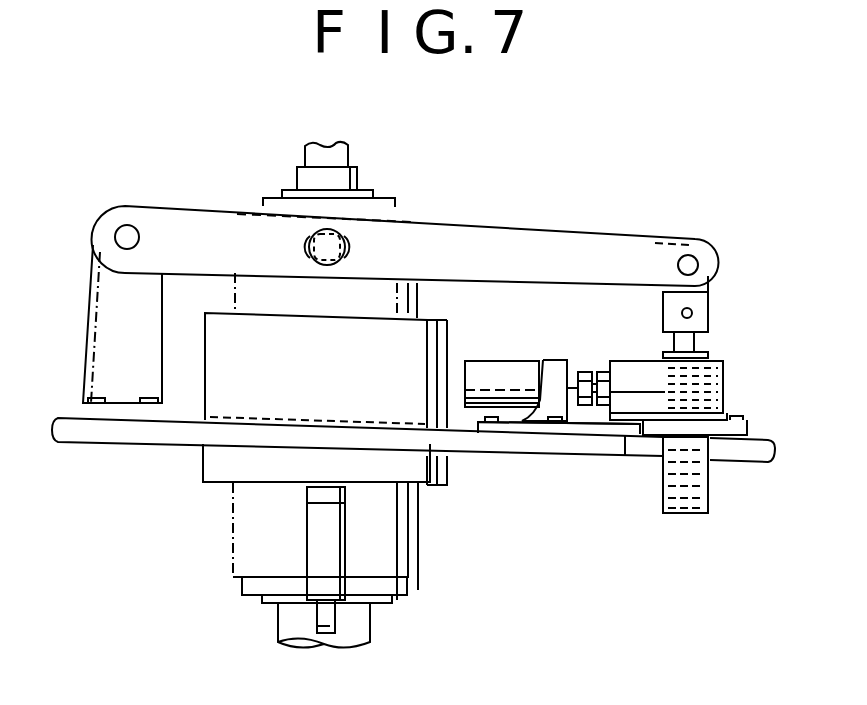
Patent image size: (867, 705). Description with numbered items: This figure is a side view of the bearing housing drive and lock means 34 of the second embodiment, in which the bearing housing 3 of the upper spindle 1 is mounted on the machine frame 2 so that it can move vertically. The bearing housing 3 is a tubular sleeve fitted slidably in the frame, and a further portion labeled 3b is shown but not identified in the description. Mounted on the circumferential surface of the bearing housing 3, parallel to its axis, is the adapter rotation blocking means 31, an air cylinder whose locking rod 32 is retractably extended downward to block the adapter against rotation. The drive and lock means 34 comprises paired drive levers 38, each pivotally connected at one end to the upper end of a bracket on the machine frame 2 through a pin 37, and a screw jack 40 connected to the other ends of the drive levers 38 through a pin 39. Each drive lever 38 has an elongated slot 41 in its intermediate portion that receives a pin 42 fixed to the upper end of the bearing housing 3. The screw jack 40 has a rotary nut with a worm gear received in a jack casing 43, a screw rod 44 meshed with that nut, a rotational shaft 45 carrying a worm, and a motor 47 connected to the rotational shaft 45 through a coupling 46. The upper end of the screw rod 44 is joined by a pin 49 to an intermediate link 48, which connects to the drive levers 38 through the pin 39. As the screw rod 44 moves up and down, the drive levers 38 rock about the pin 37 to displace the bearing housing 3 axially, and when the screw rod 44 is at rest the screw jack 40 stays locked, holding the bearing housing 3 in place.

The upper spindle 1 is at (362, 173).
The machine frame 2 is at (170, 462).
The bearing housing 3 is at (240, 548).
The motor frame 3b is at (100, 345).
The adapter rotation blocking means 31 is at (332, 547).
The locking rod 32 is at (337, 622).
The bearing housing drive and lock means 34 is at (520, 212).
The pin 37 is at (122, 196).
The drive levers 38 is at (428, 194).
The pin 39 is at (697, 232).
The screw jack 40 is at (732, 365).
The elongated slot 41 is at (346, 248).
The pin 42 is at (313, 179).
The jack casing 43 is at (665, 350).
The screw rod 44 is at (663, 500).
The rotational shaft 45 is at (607, 368).
The coupling 46 is at (586, 370).
The motor 47 is at (486, 359).
The intermediate link 48 is at (700, 299).
The pin 49 is at (693, 313).